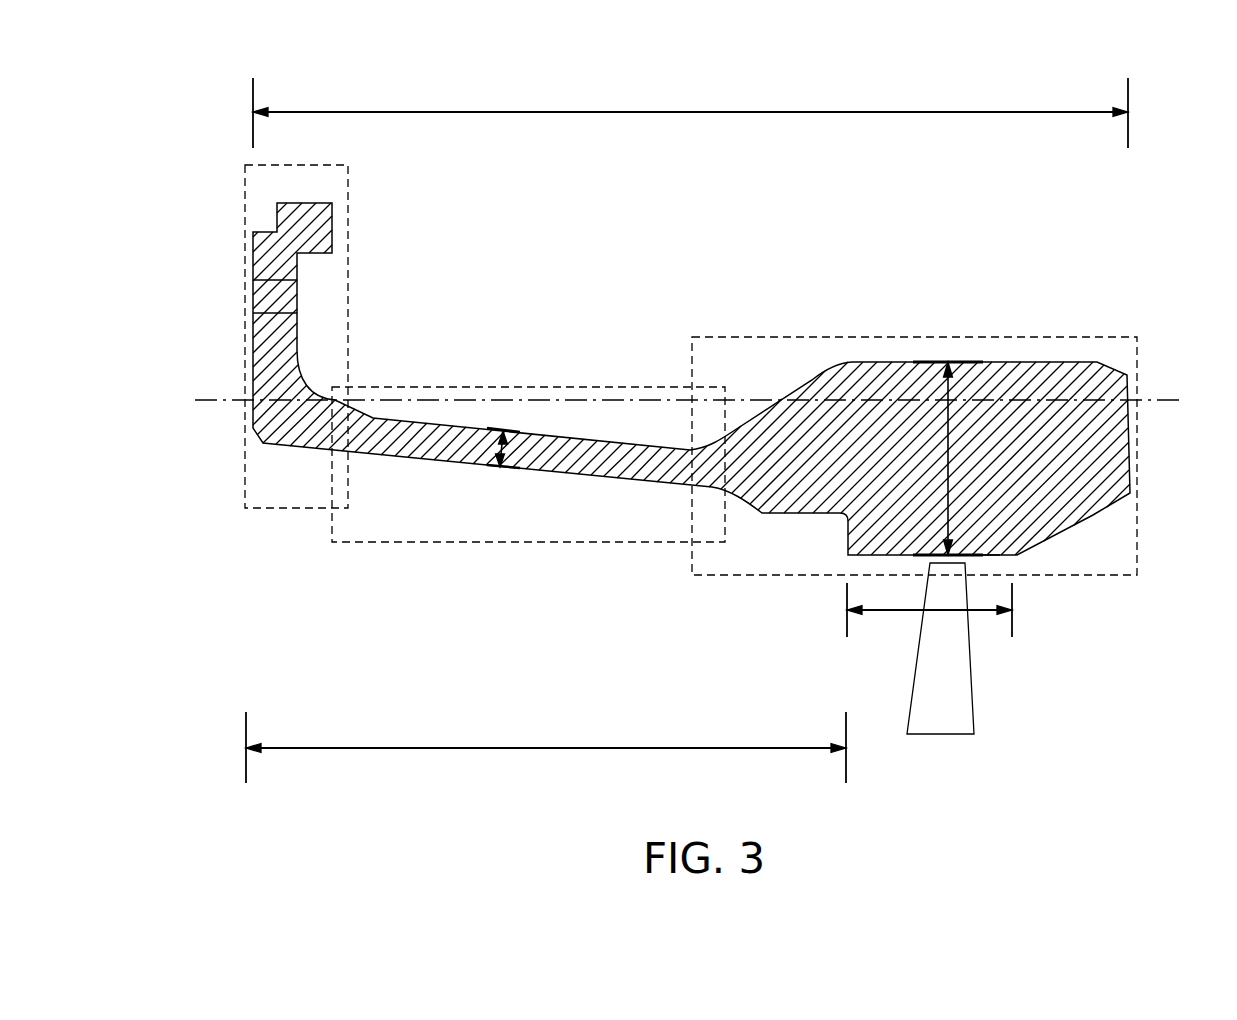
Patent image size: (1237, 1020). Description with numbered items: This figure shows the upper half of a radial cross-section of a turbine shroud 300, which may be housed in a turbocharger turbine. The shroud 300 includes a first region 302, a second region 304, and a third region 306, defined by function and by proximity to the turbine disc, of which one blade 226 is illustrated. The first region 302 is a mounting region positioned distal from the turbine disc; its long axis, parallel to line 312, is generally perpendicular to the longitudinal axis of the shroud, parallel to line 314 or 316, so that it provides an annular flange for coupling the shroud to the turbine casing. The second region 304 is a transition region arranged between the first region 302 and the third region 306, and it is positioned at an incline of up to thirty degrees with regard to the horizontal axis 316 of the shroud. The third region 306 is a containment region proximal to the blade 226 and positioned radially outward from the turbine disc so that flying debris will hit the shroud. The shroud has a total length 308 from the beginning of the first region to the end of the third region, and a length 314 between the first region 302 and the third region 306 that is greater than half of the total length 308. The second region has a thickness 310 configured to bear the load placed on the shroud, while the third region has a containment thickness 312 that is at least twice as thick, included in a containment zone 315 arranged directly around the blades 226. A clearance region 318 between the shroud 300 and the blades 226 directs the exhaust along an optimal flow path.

The blade 226 is at (970, 672).
The shroud 300 is at (1045, 298).
The first region 302 is at (349, 178).
The second region 304 is at (497, 387).
The third region 306 is at (772, 337).
The total length 308 is at (662, 112).
The thickness 310 is at (512, 432).
The containment thickness 312 is at (952, 362).
The length 314 is at (653, 748).
The containment zone 315 is at (1014, 600).
The horizontal axis 316 is at (1170, 398).
The clearance region 318 is at (976, 565).